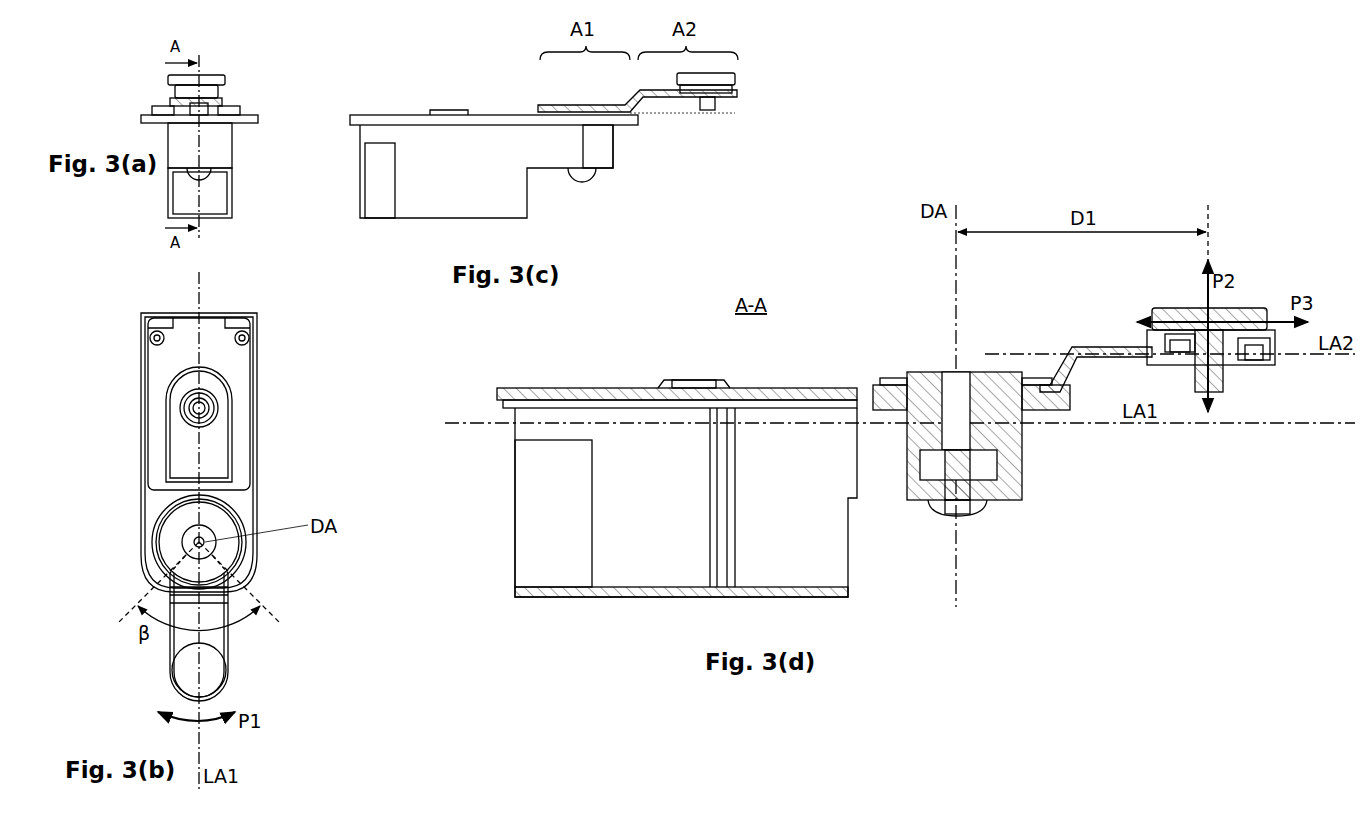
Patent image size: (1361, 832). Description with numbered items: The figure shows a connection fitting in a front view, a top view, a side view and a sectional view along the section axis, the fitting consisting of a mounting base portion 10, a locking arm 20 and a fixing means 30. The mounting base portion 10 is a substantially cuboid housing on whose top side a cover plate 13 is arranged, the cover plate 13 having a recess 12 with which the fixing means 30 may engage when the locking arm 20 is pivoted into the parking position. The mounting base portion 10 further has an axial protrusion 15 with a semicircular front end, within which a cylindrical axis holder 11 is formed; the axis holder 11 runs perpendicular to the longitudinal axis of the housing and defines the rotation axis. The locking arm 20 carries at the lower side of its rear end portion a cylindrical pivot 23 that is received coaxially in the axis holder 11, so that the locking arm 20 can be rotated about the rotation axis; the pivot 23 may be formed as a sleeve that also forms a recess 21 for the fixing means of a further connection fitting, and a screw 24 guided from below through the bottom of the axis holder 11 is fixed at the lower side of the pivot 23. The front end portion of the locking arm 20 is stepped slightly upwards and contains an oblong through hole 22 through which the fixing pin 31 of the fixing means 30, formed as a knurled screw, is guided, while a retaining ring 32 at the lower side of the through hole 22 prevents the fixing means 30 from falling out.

In FIG. 3A, the mounting base portion 10 is at (199, 166).
In FIG. 3B, the mounting base portion 10 is at (257, 494).
In FIG. 3C, the mounting base portion 10 is at (433, 184).
In FIG. 3D, the mounting base portion 10 is at (815, 544).
In FIG. 3D, the axis holder 11 is at (1000, 450).
In FIG. 3B, the recess 12 is at (217, 405).
In FIG. 3D, the recess 12 is at (690, 380).
In FIG. 3B, the cover plate 13 is at (220, 358).
In FIG. 3D, the cover plate 13 is at (615, 388).
In FIG. 3C, the axial protrusion 15 is at (603, 148).
In FIG. 3B, the locking arm 20 is at (207, 605).
In FIG. 3C, the locking arm 20 is at (633, 95).
In FIG. 3D, the locking arm 20 is at (1070, 350).
In FIG. 3D, the recess 21 is at (952, 395).
In FIG. 3D, the through hole 22 is at (1183, 335).
In FIG. 3D, the pivot 23 is at (985, 430).
In FIG. 3D, the screw 24 is at (975, 508).
In FIG. 3A, the fixing means 30 is at (218, 72).
In FIG. 3B, the fixing means 30 is at (180, 674).
In FIG. 3C, the fixing means 30 is at (737, 82).
In FIG. 3D, the fixing means 30 is at (1243, 308).
In FIG. 3C, the fixing pin 31 is at (712, 113).
In FIG. 3D, the fixing pin 31 is at (1215, 380).
In FIG. 3D, the retaining ring 32 is at (1250, 356).